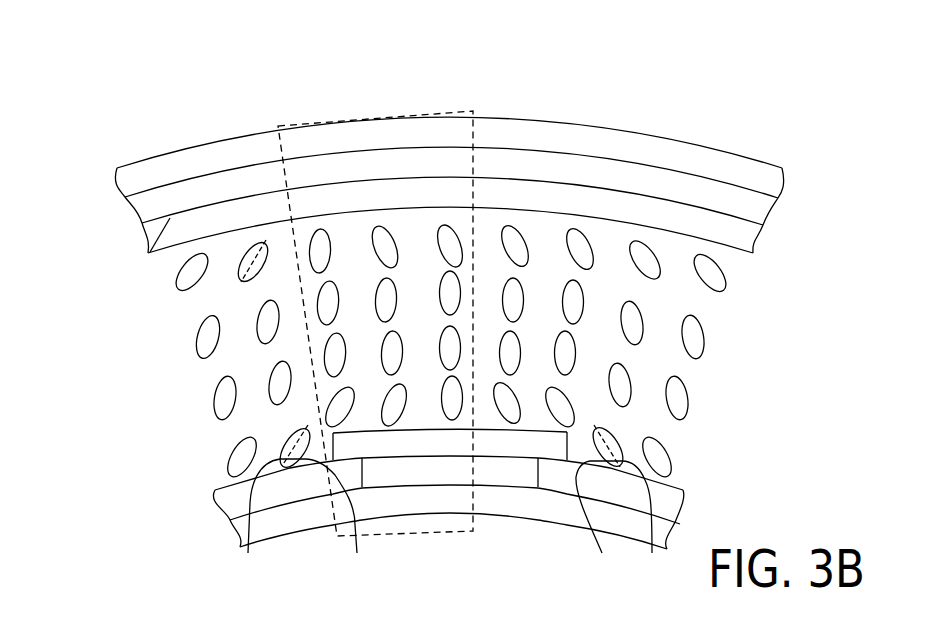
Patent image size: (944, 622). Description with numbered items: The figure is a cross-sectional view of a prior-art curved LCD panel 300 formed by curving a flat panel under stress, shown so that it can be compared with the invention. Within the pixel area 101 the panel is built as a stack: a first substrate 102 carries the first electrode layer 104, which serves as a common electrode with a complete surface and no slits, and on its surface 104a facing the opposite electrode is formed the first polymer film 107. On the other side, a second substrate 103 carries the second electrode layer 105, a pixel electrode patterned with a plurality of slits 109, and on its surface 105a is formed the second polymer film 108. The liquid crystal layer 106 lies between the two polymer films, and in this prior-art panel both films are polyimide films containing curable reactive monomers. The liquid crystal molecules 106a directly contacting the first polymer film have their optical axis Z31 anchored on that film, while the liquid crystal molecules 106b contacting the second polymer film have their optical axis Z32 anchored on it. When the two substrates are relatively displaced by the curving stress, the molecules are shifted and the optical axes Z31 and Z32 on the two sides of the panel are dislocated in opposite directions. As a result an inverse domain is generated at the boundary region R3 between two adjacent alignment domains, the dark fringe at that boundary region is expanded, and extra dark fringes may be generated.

The curved LCD panel 300 is at (64, 50).
The pixel area 101 is at (461, 165).
The first substrate 102 is at (764, 182).
The first electrode layer 104 is at (757, 210).
The surface of the first electrode layer 104a is at (168, 229).
The first polymer film 107 is at (745, 240).
The liquid crystal layer 106 is at (505, 278).
The liquid crystal molecules 106a is at (252, 264).
The liquid crystal molecules 106b is at (448, 534).
The second substrate 103 is at (523, 505).
The second electrode layer 105 is at (490, 475).
The surface of the second electrode layer 105a is at (385, 436).
The second polymer film 108 is at (297, 487).
The slits 109 is at (413, 504).
The boundary region R3 is at (453, 108).
The optical axis Z31 is at (267, 242).
The optical axis Z32 is at (451, 436).